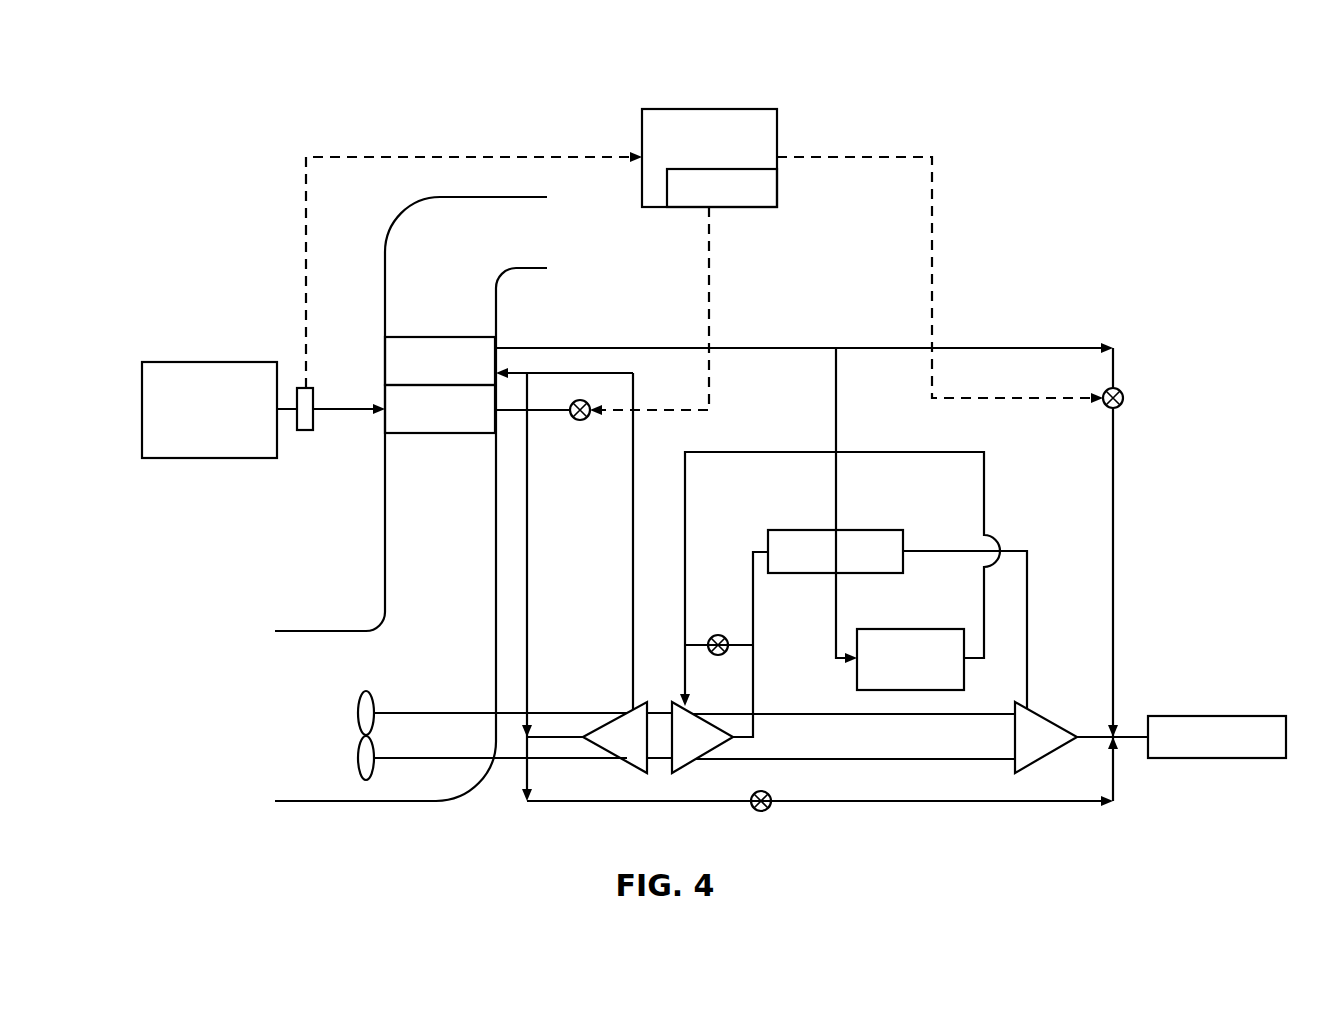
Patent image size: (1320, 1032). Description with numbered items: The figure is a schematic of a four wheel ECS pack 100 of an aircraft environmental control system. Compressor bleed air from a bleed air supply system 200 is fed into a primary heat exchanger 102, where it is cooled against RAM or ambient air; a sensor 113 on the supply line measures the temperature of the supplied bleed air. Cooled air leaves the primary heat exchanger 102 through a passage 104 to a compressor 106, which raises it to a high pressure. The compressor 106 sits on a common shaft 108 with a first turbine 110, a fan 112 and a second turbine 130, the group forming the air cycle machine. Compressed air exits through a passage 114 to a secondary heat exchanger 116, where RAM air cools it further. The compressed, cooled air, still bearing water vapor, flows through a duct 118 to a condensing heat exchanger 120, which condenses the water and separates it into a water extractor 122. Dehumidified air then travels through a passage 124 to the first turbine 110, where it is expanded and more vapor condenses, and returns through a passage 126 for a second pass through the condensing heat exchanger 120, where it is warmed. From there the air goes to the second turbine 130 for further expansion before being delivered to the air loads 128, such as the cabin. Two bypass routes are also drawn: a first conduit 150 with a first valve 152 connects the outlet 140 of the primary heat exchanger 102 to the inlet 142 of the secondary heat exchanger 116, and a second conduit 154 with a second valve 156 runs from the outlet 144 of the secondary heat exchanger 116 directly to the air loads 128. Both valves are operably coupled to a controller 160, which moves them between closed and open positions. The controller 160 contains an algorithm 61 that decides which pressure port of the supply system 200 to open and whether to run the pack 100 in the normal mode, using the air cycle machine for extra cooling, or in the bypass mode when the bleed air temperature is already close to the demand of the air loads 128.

The ECS pack 100 is at (228, 102).
The compressor bleed air supply system 200 is at (222, 362).
The sensor 113 is at (312, 432).
The controller 160 is at (707, 109).
The algorithm 61 is at (667, 183).
The secondary heat exchanger 116 is at (440, 337).
The primary heat exchanger 102 is at (440, 433).
The outlet of the primary heat exchanger 140 is at (516, 412).
The inlet of the secondary heat exchanger 142 is at (500, 358).
The outlet of the secondary heat exchanger 144 is at (550, 348).
The first conduit 150 is at (620, 410).
The first valve 152 is at (578, 421).
The duct 118 is at (783, 348).
The passage 124 is at (735, 452).
The passage 126 is at (753, 672).
The condensing heat exchanger 120 is at (833, 530).
The water extractor 122 is at (912, 629).
The passage 114 is at (633, 548).
The fan 112 is at (360, 758).
The passage 104 is at (548, 737).
The shaft 108 is at (517, 762).
The compressor 106 is at (637, 775).
The first turbine 110 is at (680, 775).
The second turbine 130 is at (1030, 775).
The air loads 128 is at (1215, 716).
The second conduit 154 is at (1113, 608).
The second valve 156 is at (1123, 398).